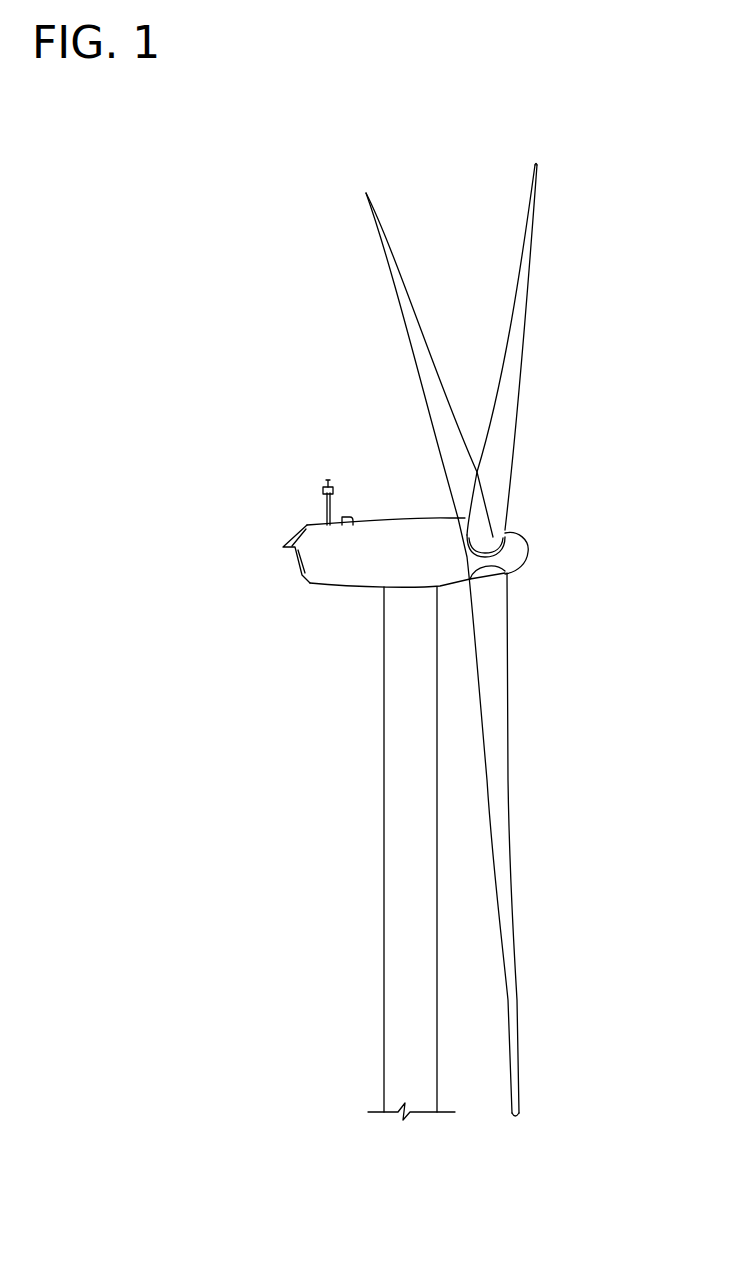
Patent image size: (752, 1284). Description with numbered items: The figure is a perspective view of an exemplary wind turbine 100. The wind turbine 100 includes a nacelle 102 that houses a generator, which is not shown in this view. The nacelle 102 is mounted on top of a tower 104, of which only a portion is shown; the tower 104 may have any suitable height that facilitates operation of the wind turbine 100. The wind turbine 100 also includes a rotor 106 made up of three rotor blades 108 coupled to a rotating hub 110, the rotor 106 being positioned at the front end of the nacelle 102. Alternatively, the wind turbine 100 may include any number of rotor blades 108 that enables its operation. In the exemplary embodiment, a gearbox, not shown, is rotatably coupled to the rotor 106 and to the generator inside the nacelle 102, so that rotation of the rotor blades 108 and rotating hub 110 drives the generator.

The wind turbine 100 is at (272, 231).
The nacelle 102 is at (322, 590).
The tower 104 is at (384, 808).
The rotor 106 is at (575, 336).
The rotor blades 108 is at (398, 266).
The rotating hub 110 is at (522, 560).